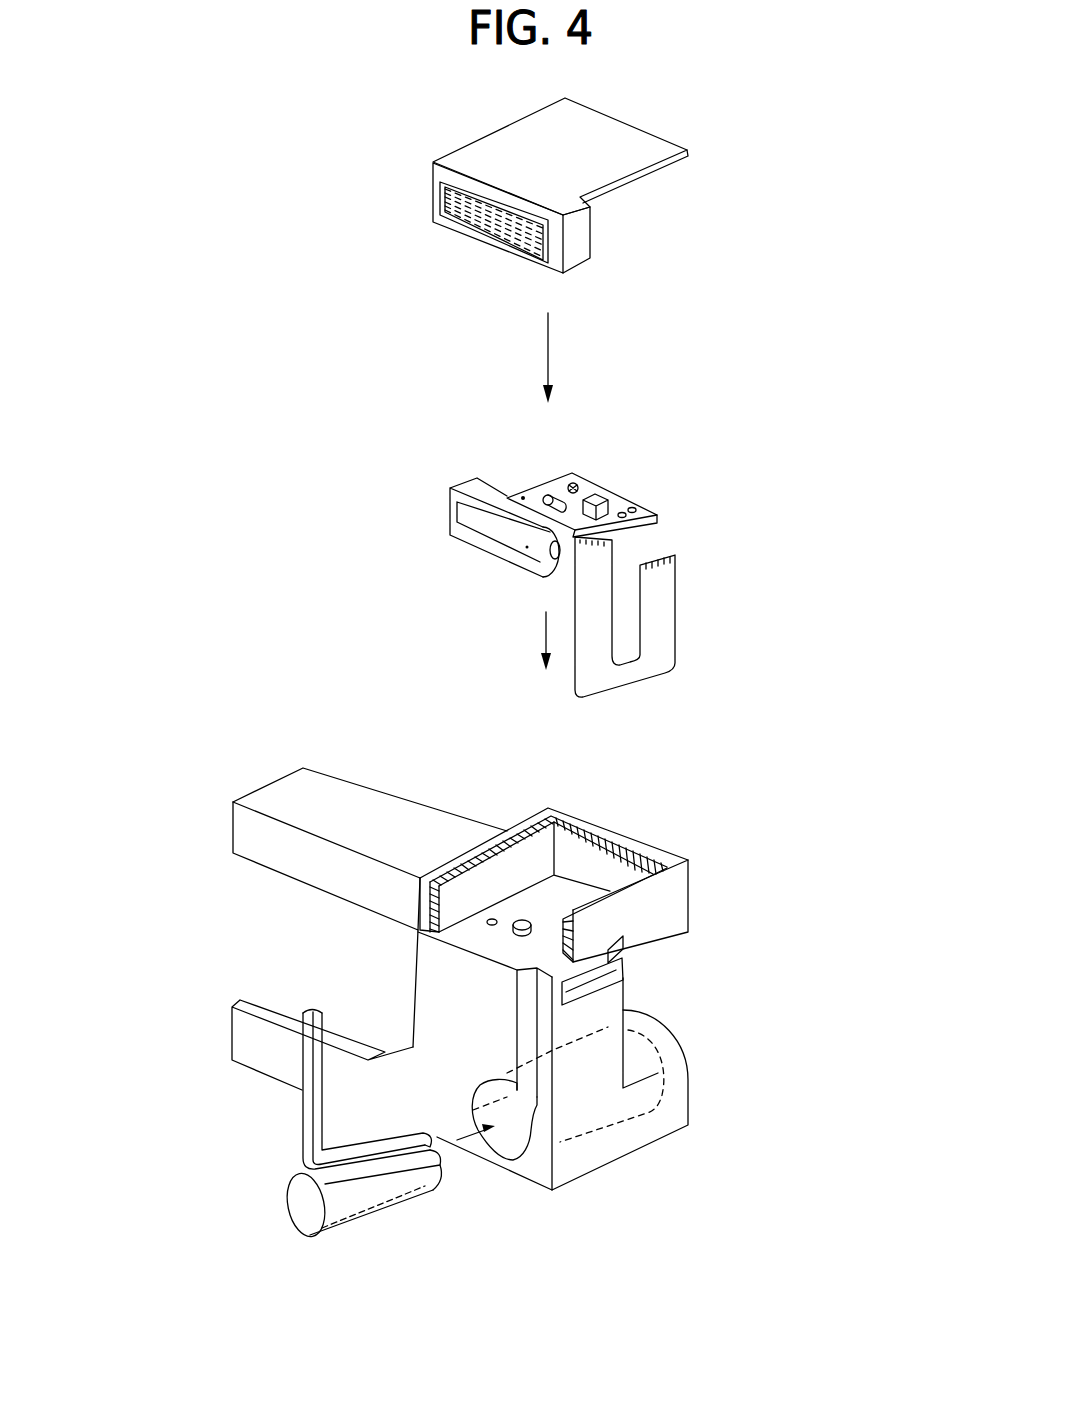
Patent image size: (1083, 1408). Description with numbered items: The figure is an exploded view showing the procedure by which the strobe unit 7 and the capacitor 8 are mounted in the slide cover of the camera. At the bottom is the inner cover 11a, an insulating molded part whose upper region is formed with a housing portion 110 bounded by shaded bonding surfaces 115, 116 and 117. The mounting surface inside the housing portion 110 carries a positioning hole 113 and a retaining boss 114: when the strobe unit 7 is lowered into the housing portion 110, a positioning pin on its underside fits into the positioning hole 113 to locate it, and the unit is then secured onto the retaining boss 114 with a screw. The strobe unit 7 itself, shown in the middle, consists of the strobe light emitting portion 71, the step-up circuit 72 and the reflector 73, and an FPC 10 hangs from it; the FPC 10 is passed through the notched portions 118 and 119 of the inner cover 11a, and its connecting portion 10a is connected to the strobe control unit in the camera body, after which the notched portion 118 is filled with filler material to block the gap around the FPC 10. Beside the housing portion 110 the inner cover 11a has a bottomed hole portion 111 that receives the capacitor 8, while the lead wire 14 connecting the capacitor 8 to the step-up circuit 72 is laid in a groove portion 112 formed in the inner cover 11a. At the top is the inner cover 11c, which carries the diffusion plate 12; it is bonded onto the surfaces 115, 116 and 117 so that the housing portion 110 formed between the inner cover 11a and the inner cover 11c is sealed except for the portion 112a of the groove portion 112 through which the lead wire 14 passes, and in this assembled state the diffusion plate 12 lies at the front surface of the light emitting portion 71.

The inner cover 11c is at (647, 147).
The diffusion plate 12 is at (487, 240).
The strobe unit 7 is at (571, 514).
The step-up circuit 72 is at (592, 480).
The reflector 73 is at (485, 492).
The strobe light emitting portion 71 is at (518, 543).
The FPC 10 is at (671, 611).
The connecting portion 10a is at (673, 557).
The inner cover 11a is at (305, 783).
The housing portion 110 is at (596, 851).
The surface 117 is at (607, 840).
The surface 115 is at (633, 913).
The positioning hole 113 is at (490, 918).
The retaining boss 114 is at (520, 919).
The surface 116 is at (393, 932).
The portion of groove portion 112a is at (460, 945).
The groove portion 112 is at (525, 1040).
The notched portion 118 is at (617, 962).
The notched portion 119 is at (598, 990).
The hole portion 111 is at (507, 1136).
The lead wire 14 is at (310, 1117).
The capacitor 8 is at (380, 1197).